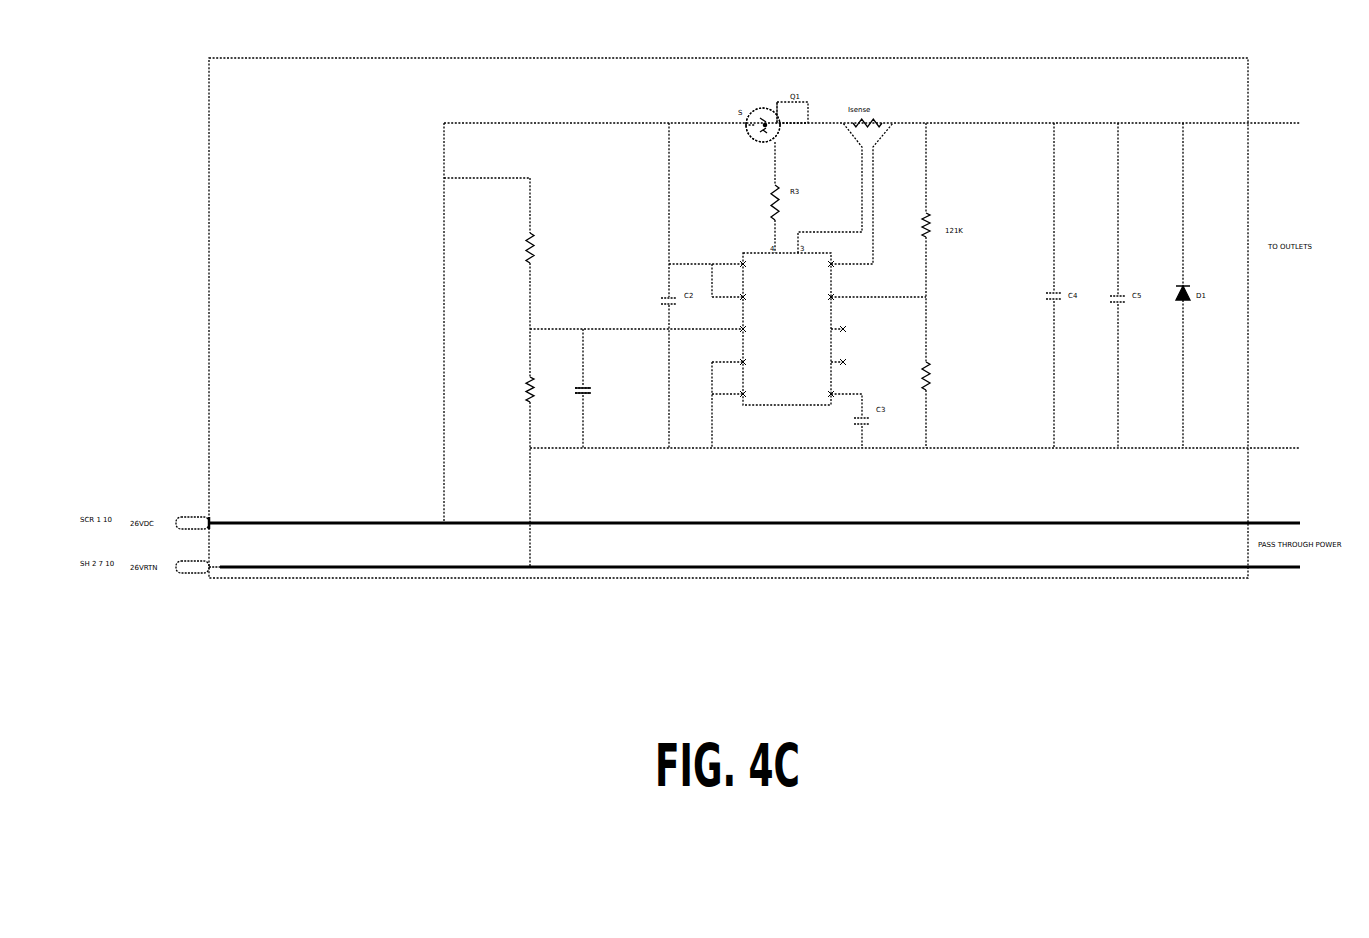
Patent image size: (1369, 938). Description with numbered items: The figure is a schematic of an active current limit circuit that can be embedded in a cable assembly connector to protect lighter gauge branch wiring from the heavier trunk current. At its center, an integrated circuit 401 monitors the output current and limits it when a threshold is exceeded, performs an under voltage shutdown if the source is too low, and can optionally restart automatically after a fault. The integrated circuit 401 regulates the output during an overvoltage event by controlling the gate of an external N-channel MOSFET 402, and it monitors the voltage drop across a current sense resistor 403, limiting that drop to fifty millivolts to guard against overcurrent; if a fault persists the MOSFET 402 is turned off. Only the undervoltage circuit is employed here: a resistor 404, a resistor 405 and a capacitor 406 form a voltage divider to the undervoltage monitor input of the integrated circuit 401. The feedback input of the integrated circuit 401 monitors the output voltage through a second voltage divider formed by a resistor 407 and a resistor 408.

The integrated circuit 401 is at (753, 246).
The N-channel metal oxide semiconductor field effect transistor (MOSFET) 402 is at (765, 100).
The current sense resistor 403 is at (870, 100).
The resistor 404 is at (547, 245).
The resistor 405 is at (522, 388).
The capacitor 406 is at (620, 366).
The resistor 407 is at (940, 215).
The resistor 408 is at (940, 383).